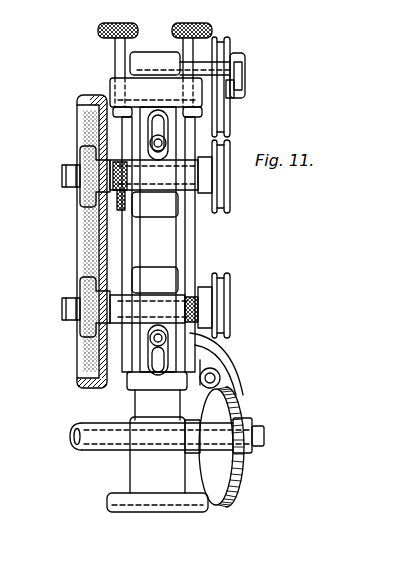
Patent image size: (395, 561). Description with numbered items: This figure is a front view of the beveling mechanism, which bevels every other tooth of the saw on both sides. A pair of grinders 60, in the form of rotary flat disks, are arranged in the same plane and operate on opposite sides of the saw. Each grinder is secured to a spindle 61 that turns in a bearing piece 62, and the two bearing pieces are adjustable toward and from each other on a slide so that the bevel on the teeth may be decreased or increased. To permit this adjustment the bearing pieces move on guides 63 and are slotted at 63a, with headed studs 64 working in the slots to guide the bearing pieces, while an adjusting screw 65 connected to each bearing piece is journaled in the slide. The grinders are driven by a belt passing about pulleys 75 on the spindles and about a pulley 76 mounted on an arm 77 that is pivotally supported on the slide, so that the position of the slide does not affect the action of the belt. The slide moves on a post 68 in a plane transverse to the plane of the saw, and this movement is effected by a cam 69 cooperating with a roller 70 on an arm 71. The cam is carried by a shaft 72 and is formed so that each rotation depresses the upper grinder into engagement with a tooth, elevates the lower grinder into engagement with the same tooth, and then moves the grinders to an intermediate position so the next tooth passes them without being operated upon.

The grinder 60 is at (85, 258).
The spindle 61 is at (142, 298).
The bearing piece 62 is at (141, 215).
The guide 63 is at (168, 237).
The slot 63a is at (150, 397).
The headed stud 64 is at (150, 362).
The adjusting screw 65 is at (208, 263).
The post 68 is at (157, 464).
The cam 69 is at (233, 494).
The roller 70 is at (220, 367).
The arm 71 is at (212, 357).
The shaft 72 is at (255, 434).
The pulley 75 is at (238, 287).
The pulley 76 is at (224, 50).
The arm 77 is at (243, 82).